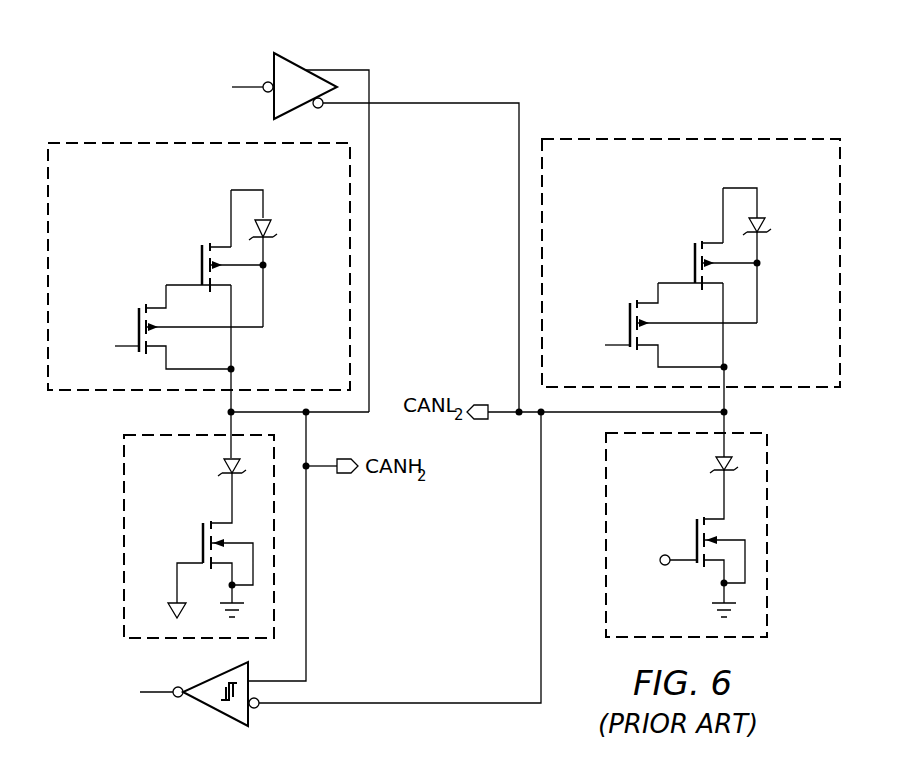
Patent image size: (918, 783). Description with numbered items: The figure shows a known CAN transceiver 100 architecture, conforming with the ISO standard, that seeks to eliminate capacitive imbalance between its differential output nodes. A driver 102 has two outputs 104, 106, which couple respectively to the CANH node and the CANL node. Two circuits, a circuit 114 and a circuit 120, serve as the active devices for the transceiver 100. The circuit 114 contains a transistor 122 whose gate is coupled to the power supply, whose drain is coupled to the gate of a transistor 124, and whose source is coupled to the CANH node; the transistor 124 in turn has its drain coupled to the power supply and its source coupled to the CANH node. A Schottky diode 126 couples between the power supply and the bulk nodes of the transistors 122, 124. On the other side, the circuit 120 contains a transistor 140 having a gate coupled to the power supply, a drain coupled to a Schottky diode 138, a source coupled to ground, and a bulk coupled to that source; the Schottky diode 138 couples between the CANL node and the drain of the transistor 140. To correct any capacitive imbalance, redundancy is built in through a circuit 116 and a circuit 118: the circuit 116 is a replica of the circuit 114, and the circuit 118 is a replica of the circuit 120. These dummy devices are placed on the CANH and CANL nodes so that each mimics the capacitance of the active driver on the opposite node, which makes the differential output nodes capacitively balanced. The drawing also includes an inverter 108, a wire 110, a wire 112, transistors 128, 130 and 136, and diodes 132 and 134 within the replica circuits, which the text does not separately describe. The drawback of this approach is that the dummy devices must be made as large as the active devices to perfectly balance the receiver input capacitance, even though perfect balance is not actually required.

The transceiver 100 is at (615, 70).
The driver 102 is at (290, 58).
The output 104 is at (371, 86).
The output 106 is at (478, 102).
The inverter with hysteresis 108 is at (215, 712).
The CANH pull-down control line 110 is at (308, 641).
The CANL pull-down control line 112 is at (327, 707).
The circuit 114 is at (138, 140).
The circuit 116 is at (690, 136).
The circuit 118 is at (122, 538).
The circuit 120 is at (770, 538).
The transistor 122 is at (137, 318).
The transistor 124 is at (201, 256).
The Schottky diode 126 is at (270, 229).
The transistor 128 is at (628, 313).
The transistor 130 is at (693, 251).
The zener diode 132 is at (764, 227).
The zener diode 134 is at (223, 468).
The transistor 136 is at (201, 531).
The Schottky diode 138 is at (716, 466).
The transistor 140 is at (695, 529).